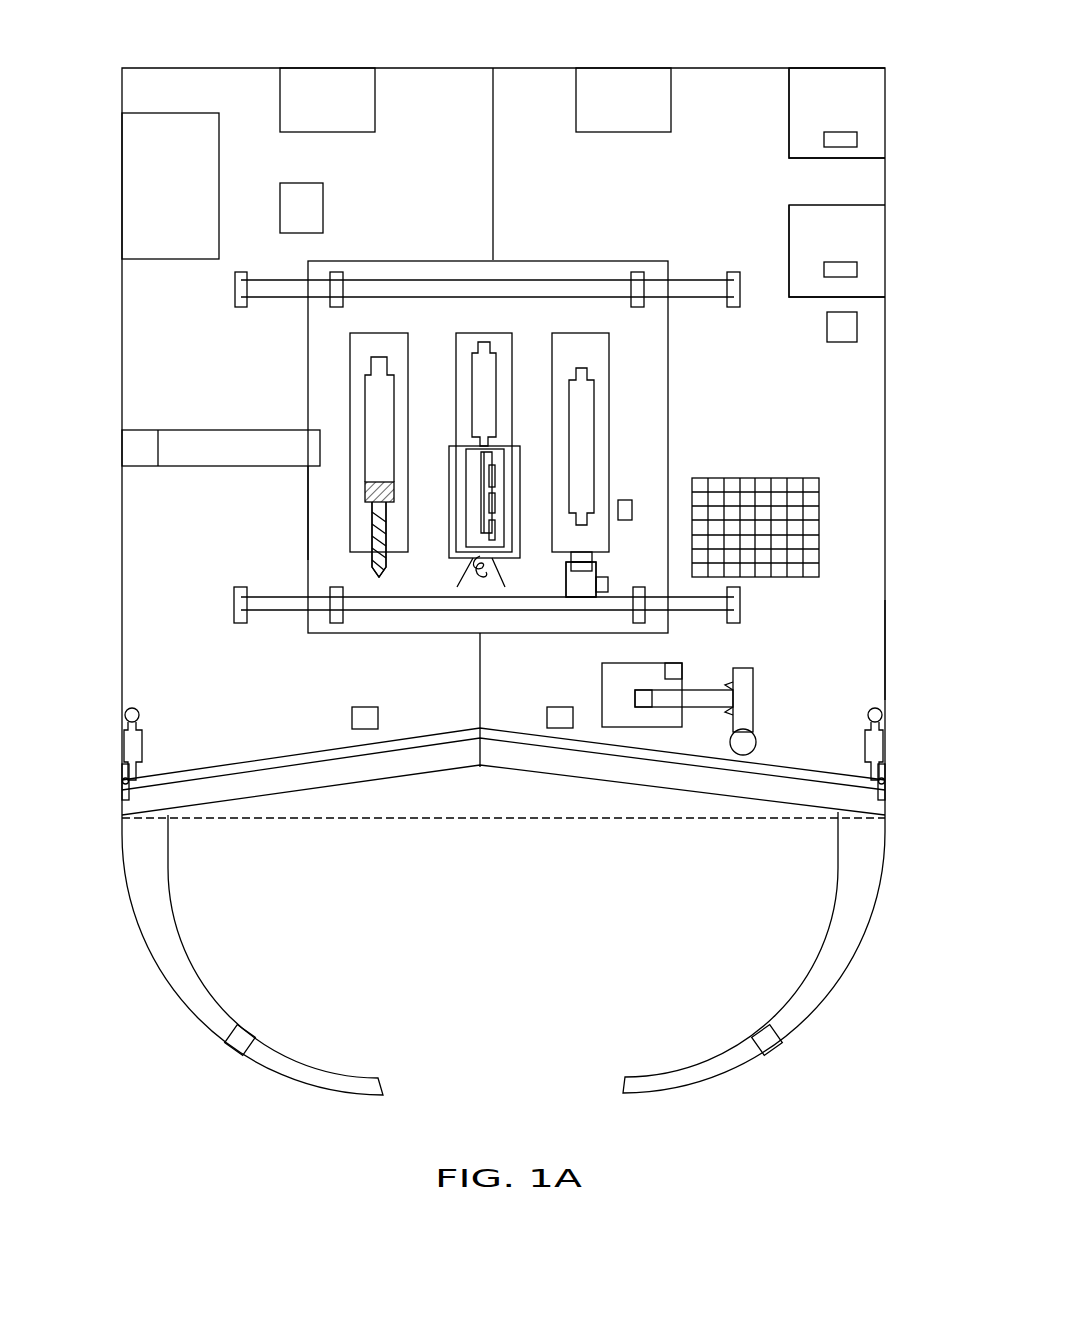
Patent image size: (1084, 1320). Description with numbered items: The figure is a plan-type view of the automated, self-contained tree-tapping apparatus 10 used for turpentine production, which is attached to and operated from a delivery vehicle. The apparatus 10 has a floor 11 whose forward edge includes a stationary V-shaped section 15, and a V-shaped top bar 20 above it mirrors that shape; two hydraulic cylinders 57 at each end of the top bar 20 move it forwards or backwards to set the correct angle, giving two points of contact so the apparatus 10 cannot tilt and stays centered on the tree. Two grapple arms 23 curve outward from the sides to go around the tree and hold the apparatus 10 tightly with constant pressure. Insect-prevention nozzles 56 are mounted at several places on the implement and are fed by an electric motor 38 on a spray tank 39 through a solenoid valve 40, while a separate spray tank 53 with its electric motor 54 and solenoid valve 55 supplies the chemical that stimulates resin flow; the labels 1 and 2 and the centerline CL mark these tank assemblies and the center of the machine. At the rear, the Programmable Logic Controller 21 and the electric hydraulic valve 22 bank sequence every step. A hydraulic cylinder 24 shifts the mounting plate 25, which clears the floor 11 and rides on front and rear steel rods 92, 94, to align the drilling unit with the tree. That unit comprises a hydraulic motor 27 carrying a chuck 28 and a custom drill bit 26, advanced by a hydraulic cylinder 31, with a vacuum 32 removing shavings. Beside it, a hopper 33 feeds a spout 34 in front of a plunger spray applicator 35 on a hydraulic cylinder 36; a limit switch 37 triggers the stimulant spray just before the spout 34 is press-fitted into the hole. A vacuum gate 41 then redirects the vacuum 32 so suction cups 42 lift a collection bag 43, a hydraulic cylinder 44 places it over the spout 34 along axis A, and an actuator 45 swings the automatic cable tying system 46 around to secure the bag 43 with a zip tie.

The apparatus 10 is at (120, 660).
The floor 11 is at (868, 650).
The V-shaped section 15 is at (697, 793).
The V-shaped top bar 20 is at (772, 760).
The Programmable Logic Controller 21 is at (328, 80).
The electric hydraulic valve 22 is at (621, 80).
The grapple arms 23 is at (124, 910).
The hydraulic cylinder 24 is at (215, 430).
The mounting plate 25 is at (308, 503).
The drill bit 26 is at (372, 567).
The hydraulic motor 27 is at (365, 487).
The chuck 28 is at (377, 507).
The hydraulic cylinder 31 is at (365, 400).
The vacuum 32 is at (219, 170).
The hopper 33 is at (822, 530).
The spout 34 is at (566, 578).
The plunger spray applicator 35 is at (582, 578).
The hydraulic cylinder 36 is at (594, 403).
The limit switch 37 is at (610, 588).
The electric motor 38 is at (857, 140).
The spray tank 39 is at (885, 102).
The solenoid valve 40 is at (634, 507).
The vacuum gate 41 is at (323, 204).
The suction cups 42 is at (498, 503).
The collection bag 43 is at (489, 520).
The hydraulic cylinder 44 is at (472, 403).
The actuator 45 is at (673, 663).
The automatic cable tying system 46 is at (755, 695).
The spray tank 53 is at (885, 230).
The electric motor 54 is at (857, 270).
The solenoid valve 55 is at (857, 328).
The nozzles 56 is at (352, 718).
The hydraulic cylinders 57 is at (124, 745).
The steel rod 92 is at (235, 290).
The steel rod 94 is at (234, 610).
The sensor unit 1 is at (885, 228).
The sensor unit 2 is at (885, 96).
The axis A is at (473, 558).
The centerline CL is at (495, 182).